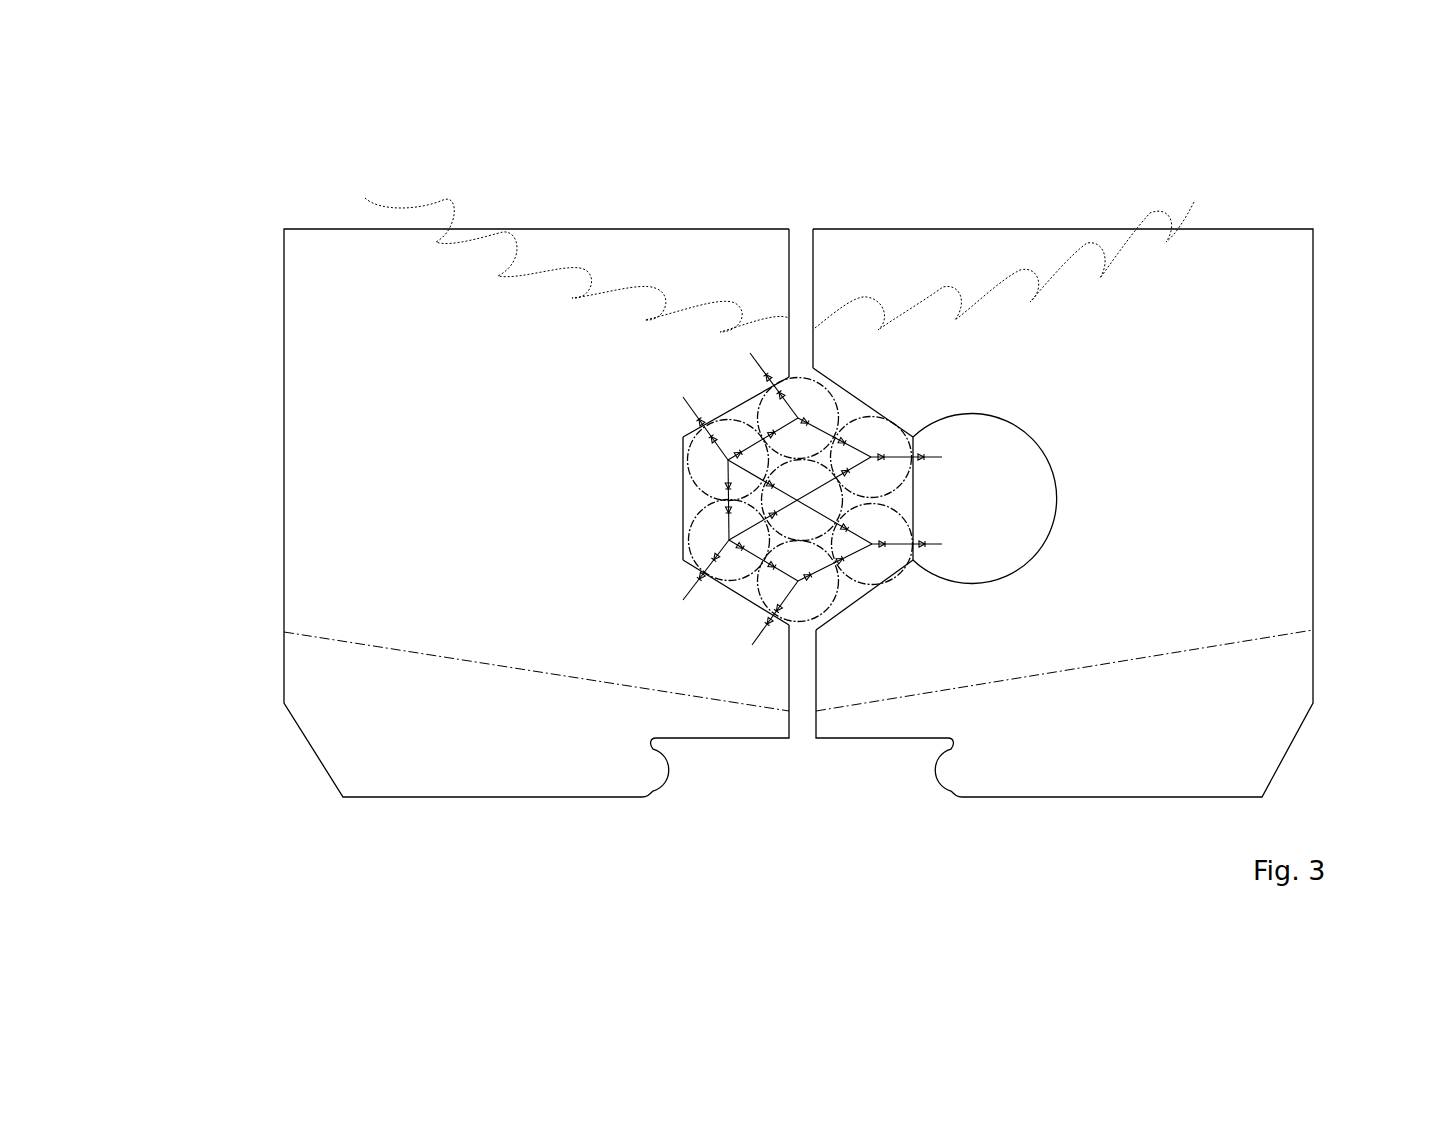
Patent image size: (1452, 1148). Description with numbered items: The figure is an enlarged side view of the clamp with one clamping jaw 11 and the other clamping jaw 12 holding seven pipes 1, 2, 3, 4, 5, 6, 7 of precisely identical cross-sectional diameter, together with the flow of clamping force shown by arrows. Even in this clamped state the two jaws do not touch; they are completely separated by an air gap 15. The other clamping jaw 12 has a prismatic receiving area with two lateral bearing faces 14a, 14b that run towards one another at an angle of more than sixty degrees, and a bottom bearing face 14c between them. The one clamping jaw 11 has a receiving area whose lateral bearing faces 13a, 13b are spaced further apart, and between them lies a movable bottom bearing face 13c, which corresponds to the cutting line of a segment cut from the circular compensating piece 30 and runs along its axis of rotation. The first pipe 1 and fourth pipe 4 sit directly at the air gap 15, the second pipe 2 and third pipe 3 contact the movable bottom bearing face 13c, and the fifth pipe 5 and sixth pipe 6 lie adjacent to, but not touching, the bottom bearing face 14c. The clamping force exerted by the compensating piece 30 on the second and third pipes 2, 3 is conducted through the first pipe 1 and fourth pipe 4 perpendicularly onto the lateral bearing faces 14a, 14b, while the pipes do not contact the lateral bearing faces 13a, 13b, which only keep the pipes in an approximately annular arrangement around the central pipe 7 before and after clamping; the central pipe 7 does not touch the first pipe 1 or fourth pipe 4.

The first pipe 1 is at (802, 402).
The second pipe 2 is at (882, 435).
The third pipe 3 is at (883, 562).
The fourth pipe 4 is at (803, 602).
The fifth pipe 5 is at (712, 538).
The sixth pipe 6 is at (707, 457).
The seventh central pipe 7 is at (820, 498).
The one clamping jaw 11 is at (1268, 447).
The other clamping jaw 12 is at (315, 566).
The lateral bearing face 13a is at (855, 387).
The lateral bearing face 13b is at (857, 602).
The movable bottom bearing face 13c is at (913, 498).
The other lateral bearing face 14a is at (738, 393).
The other lateral bearing face 14b is at (738, 587).
The other bottom bearing face 14c is at (682, 497).
The air gap 15 is at (800, 262).
The compensating piece 30 is at (1002, 480).